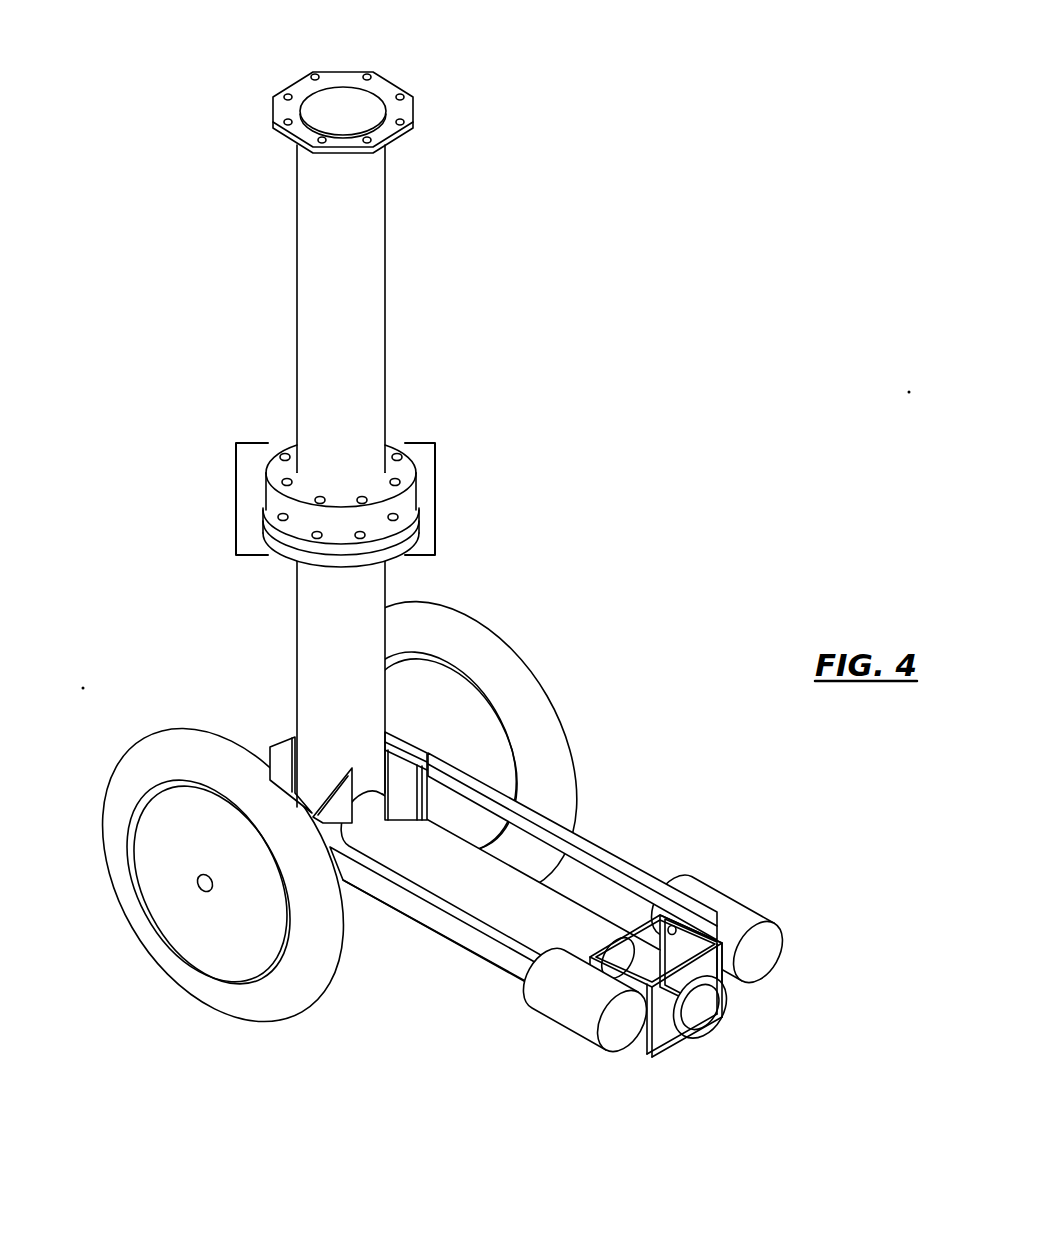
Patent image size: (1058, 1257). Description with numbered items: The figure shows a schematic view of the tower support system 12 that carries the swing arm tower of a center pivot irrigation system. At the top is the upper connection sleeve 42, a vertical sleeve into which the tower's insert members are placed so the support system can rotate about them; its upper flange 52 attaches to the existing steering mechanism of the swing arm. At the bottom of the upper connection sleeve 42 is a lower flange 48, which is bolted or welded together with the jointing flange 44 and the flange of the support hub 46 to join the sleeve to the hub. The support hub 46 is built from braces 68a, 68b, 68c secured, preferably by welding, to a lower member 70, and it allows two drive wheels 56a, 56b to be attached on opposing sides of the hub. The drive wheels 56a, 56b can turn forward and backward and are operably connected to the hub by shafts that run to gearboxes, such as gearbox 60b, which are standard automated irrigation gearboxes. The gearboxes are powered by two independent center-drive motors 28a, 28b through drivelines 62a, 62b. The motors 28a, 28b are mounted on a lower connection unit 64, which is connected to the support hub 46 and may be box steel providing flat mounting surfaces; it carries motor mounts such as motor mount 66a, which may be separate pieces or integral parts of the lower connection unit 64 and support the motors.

The tower support system 12 is at (451, 596).
The motor 28a is at (573, 1025).
The motor 28b is at (730, 903).
The upper connection sleeve 42 is at (372, 300).
The jointing flange 44 is at (402, 511).
The support hub 46 is at (451, 815).
The lower flange 48 is at (273, 468).
The upper flange 52 is at (400, 112).
The drive wheel 56a is at (140, 770).
The drive wheel 56b is at (512, 677).
The gearbox 60b is at (408, 733).
The driveline 62a is at (493, 952).
The driveline 62b is at (606, 860).
The lower connection unit 64 is at (585, 923).
The motor mount 66a is at (664, 1020).
The brace 68a is at (338, 815).
The brace 68b is at (403, 787).
The brace 68c is at (252, 722).
The lower member 70 is at (330, 617).